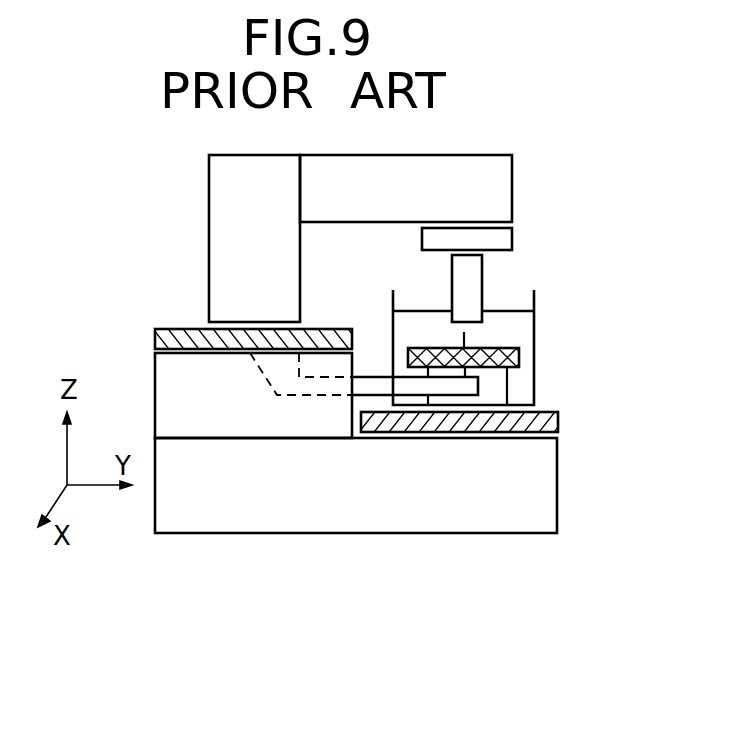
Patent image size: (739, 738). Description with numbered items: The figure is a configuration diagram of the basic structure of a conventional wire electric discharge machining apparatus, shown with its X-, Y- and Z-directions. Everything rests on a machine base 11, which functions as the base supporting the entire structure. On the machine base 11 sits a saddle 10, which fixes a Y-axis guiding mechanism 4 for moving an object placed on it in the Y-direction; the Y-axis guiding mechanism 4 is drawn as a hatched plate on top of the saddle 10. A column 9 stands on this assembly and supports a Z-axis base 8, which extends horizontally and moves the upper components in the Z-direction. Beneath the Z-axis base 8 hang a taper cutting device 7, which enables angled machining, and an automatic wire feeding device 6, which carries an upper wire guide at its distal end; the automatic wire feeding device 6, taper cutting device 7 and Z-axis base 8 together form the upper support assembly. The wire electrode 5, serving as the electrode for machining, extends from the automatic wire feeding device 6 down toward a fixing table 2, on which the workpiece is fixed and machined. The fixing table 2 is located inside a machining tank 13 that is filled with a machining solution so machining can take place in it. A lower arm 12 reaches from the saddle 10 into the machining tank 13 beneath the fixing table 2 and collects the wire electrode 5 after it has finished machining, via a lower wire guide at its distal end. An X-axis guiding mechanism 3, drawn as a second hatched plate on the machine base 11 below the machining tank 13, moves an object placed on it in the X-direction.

The fixing table 2 is at (519, 358).
The X-axis guiding mechanism 3 is at (558, 427).
The Y-axis guiding mechanism 4 is at (154, 333).
The wire electrode 5 is at (466, 343).
The automatic wire feeding device 6 is at (482, 282).
The taper cutting device 7 is at (512, 238).
The Z-axis base 8 is at (512, 170).
The column 9 is at (209, 175).
The saddle 10 is at (155, 387).
The machine base 11 is at (557, 478).
The lower arm 12 is at (478, 385).
The machining tank 13 is at (534, 327).